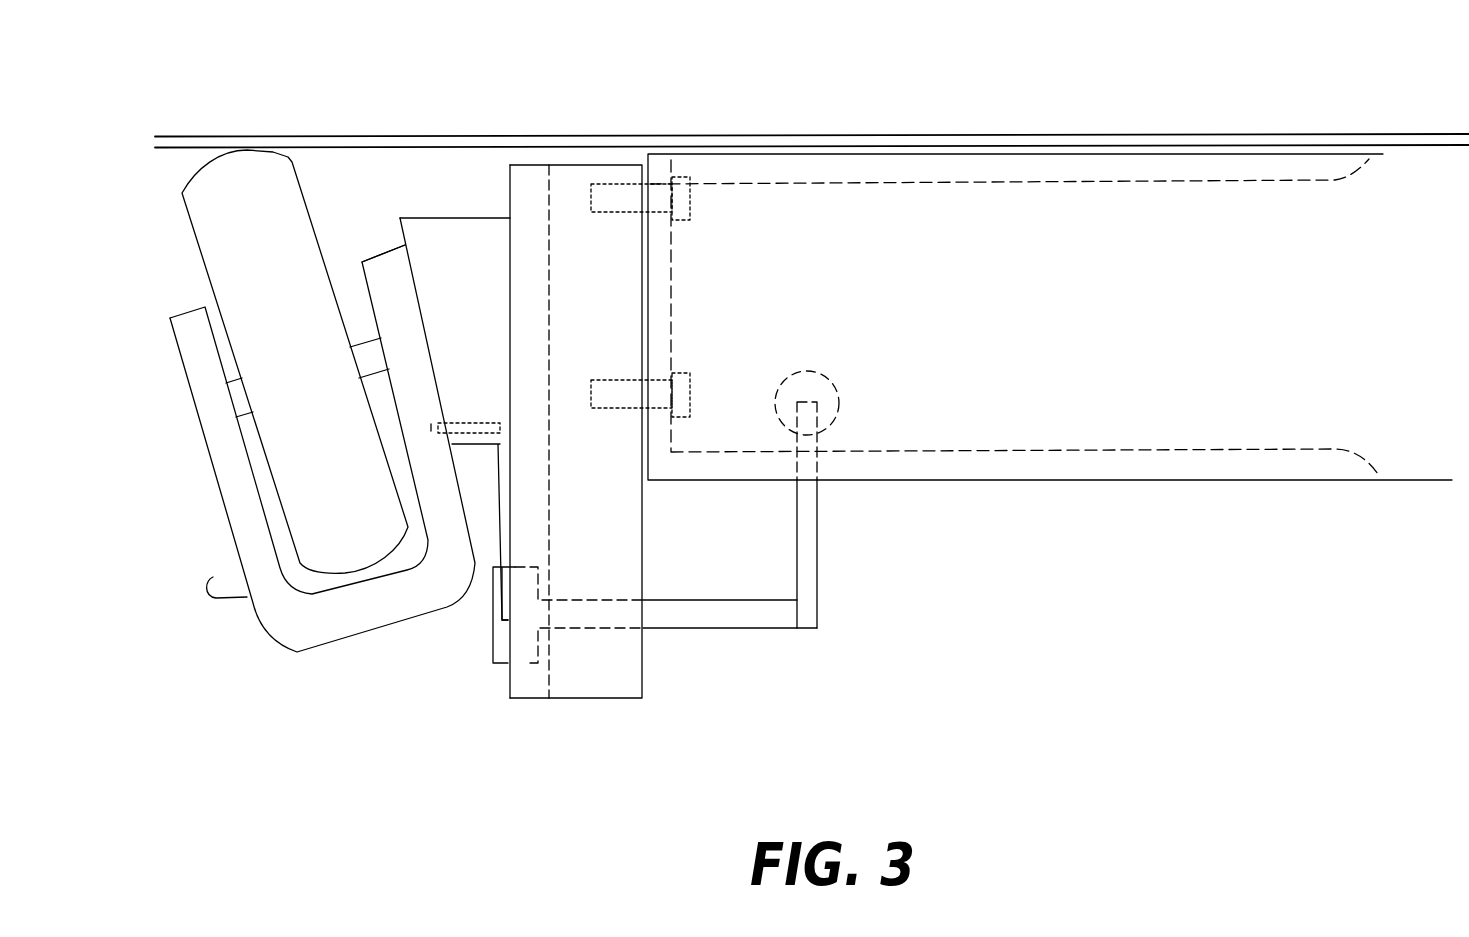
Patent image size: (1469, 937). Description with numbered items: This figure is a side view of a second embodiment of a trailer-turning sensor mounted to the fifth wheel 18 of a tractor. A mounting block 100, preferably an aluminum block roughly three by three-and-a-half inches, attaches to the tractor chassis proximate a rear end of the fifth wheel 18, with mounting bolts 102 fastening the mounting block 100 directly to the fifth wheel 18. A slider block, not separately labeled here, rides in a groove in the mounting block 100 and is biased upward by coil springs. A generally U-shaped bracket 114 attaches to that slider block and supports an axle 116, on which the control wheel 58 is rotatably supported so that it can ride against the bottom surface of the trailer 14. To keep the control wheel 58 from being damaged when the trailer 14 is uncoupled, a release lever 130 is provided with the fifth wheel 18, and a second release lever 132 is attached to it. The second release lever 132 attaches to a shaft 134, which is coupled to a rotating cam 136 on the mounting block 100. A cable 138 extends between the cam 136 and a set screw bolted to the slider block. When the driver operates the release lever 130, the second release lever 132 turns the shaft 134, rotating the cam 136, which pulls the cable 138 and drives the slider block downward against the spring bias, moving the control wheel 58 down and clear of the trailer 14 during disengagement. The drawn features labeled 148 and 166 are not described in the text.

The trailer 14 is at (435, 135).
The fifth wheel 18 is at (1223, 415).
The control wheel 58 is at (285, 195).
The mounting block 100 is at (617, 677).
The mounting bolts 102 is at (680, 203).
The U-shaped bracket 114 is at (292, 630).
The axle 116 is at (365, 353).
The release lever 130 is at (810, 377).
The second release lever 132 is at (806, 539).
The shaft 134 is at (717, 615).
The rotating cam 136 is at (518, 653).
The cable 138 is at (510, 465).
The tab 148 is at (478, 422).
The plate 166 is at (455, 253).